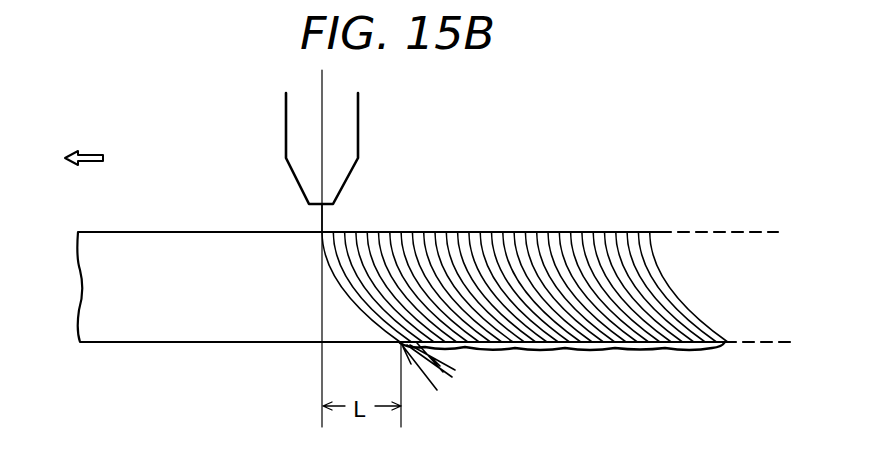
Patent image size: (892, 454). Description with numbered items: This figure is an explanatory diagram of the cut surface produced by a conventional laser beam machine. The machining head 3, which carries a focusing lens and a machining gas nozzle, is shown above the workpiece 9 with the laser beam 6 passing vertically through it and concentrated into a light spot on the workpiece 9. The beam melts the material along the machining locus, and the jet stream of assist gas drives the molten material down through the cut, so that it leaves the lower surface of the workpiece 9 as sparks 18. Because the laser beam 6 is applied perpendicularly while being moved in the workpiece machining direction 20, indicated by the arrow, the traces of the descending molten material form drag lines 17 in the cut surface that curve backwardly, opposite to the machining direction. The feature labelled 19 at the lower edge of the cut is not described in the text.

The machining head 3 is at (358, 128).
The laser beam 6 is at (323, 220).
The workpiece 9 is at (203, 343).
The drag lines 17 is at (673, 292).
The sparks 18 is at (462, 378).
The dross (burr) on lower edge 19 is at (648, 352).
The workpiece machining direction 20 is at (93, 153).